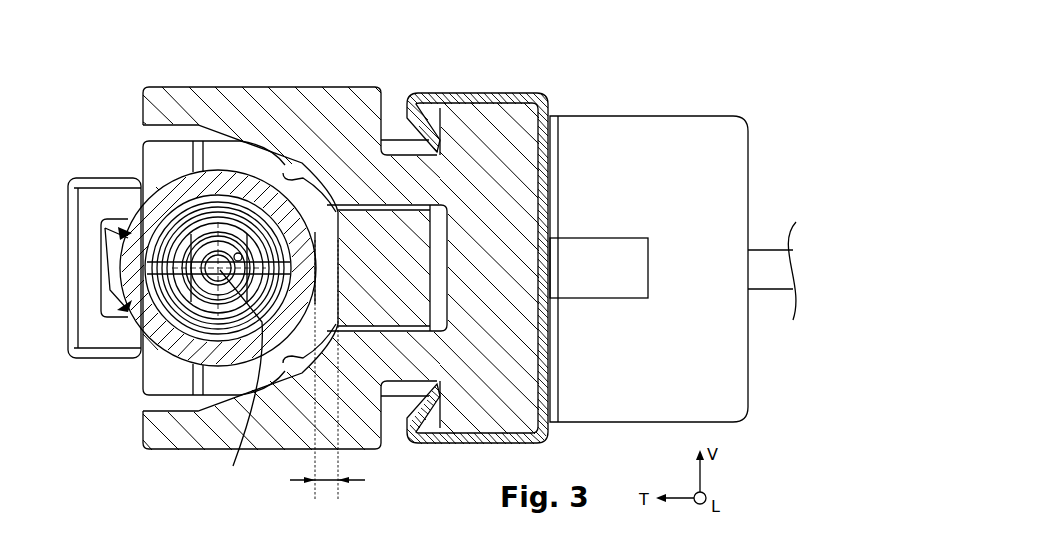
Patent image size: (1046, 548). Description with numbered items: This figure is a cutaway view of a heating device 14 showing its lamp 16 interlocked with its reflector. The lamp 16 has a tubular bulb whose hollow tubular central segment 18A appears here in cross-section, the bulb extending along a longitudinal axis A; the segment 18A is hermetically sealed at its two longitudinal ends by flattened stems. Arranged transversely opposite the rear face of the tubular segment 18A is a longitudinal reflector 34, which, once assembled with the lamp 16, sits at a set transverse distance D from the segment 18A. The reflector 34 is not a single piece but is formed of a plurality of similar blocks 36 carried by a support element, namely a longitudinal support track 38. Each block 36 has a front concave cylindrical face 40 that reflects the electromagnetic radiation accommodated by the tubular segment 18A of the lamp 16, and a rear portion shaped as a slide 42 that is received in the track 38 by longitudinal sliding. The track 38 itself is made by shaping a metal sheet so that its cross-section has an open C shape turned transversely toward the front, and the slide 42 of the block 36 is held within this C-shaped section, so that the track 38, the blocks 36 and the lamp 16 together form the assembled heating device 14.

The heating device 14 is at (155, 50).
The lamp 16 is at (135, 305).
The hollow tubular central segment 18A is at (146, 320).
The longitudinal reflector 34 is at (357, 75).
The block 36 is at (273, 105).
The longitudinal support track 38 is at (528, 93).
The front concave cylindrical face 40 is at (283, 173).
The slide 42 is at (540, 172).
The longitudinal axis A is at (241, 381).
The transverse distance D is at (327, 372).